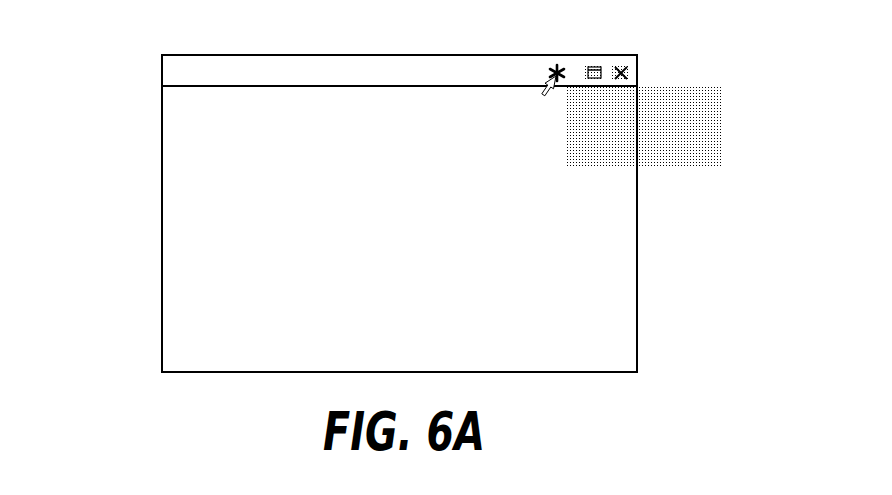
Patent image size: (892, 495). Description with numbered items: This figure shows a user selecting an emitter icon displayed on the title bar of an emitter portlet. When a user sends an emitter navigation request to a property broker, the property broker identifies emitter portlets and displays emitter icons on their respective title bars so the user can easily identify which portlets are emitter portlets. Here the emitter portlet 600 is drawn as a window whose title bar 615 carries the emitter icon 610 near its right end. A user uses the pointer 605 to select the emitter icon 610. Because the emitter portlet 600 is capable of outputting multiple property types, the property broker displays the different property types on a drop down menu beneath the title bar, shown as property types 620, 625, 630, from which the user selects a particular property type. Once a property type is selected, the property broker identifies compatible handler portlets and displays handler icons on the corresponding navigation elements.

The emitter portlet 600 is at (418, 196).
The pointer 605 is at (494, 100).
The emitter icon 610 is at (552, 64).
The title bar 615 is at (358, 67).
The property type 620 is at (689, 92).
The property type 625 is at (689, 119).
The property type 630 is at (689, 145).